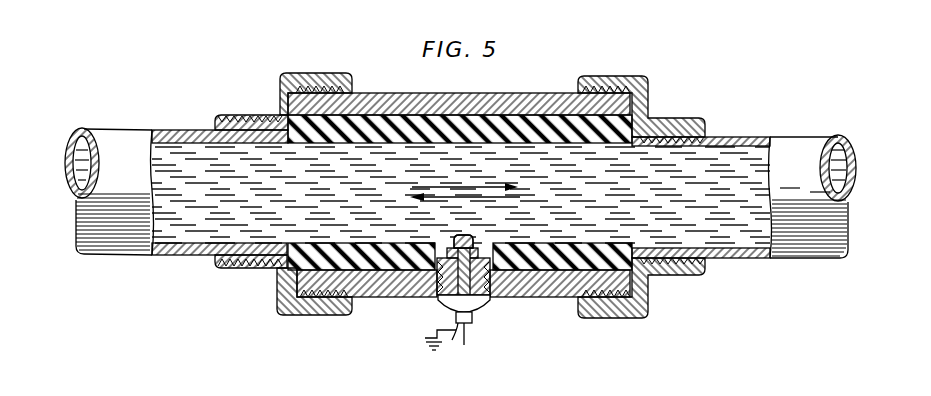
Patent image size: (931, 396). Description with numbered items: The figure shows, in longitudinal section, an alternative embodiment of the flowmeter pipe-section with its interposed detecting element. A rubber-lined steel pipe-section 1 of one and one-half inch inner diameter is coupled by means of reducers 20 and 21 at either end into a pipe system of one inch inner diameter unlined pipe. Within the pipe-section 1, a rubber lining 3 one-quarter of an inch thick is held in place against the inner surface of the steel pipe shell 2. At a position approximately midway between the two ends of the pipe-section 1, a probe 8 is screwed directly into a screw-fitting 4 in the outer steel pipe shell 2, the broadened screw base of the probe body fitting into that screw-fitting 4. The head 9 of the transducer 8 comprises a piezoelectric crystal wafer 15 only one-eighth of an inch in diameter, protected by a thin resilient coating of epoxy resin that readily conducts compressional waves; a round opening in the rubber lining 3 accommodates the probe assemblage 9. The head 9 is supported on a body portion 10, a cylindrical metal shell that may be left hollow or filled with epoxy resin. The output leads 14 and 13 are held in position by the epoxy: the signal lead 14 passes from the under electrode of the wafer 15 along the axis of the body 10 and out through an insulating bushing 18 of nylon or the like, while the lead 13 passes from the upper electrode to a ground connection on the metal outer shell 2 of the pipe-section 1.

The rubber-lined steel pipe-section 1 is at (364, 90).
The steel pipe shell 2 is at (440, 93).
The rubber lining 3 is at (502, 128).
The screw-fitting 4 is at (490, 280).
The probe 8 is at (487, 315).
The head 9 is at (465, 236).
The body portion 10 is at (440, 295).
The lead 13 is at (452, 340).
The signal lead 14 is at (464, 342).
The piezoelectric crystal wafer 15 is at (476, 245).
The insulating bushing 18 is at (454, 326).
The reducer 20 is at (311, 72).
The reducer 21 is at (606, 76).